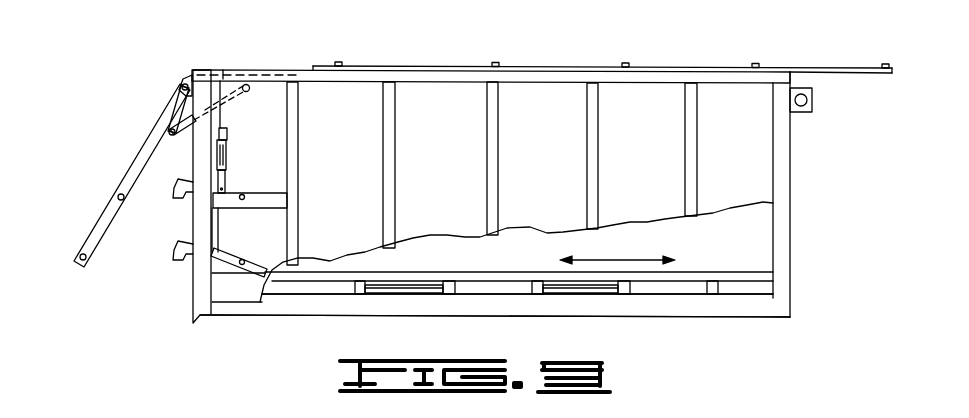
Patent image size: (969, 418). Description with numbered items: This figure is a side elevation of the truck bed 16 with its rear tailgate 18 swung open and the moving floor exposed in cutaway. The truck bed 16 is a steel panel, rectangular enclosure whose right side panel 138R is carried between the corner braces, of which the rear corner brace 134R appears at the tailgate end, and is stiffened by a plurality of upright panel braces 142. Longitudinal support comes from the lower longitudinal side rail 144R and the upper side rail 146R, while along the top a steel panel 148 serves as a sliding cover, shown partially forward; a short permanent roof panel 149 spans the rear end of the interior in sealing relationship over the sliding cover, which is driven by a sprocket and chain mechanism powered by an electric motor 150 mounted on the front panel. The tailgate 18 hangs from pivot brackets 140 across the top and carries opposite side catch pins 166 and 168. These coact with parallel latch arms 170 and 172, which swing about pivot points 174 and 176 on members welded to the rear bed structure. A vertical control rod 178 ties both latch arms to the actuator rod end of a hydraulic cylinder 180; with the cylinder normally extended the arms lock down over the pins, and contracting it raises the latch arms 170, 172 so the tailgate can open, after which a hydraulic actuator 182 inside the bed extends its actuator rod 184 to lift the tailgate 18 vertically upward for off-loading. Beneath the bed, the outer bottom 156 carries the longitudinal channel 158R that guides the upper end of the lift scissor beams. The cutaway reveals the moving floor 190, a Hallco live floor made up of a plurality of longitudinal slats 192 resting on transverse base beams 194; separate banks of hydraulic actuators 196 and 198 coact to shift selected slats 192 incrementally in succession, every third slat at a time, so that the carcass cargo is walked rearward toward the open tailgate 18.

The truck bed 16 is at (636, 92).
The rear tailgate 18 is at (147, 139).
The rear corner brace 134R is at (192, 315).
The side panel 138R is at (762, 172).
The pivot bracket 140 is at (188, 75).
The upright panel brace 142 is at (301, 126).
The longitudinal side rail 144R is at (237, 293).
The upper side rail 146R is at (731, 78).
The steel panel sliding cover 148 is at (543, 67).
The permanent roof panel 149 is at (291, 63).
The electric motor 150 is at (813, 99).
The outer bottom 156 is at (380, 300).
The longitudinal channel 158R is at (311, 304).
The catch pin 166 is at (118, 197).
The catch pin 168 is at (80, 256).
The latch arm 170 is at (179, 195).
The latch arm 172 is at (182, 257).
The pivot point 174 is at (242, 194).
The pivot point 176 is at (242, 259).
The vertical control rod 178 is at (219, 224).
The hydraulic cylinder 180 is at (230, 152).
The hydraulic actuator 182 is at (228, 55).
The actuator rod 184 is at (178, 113).
The moving floor 190 is at (492, 274).
The longitudinal slat 192 is at (413, 274).
The transverse base beam 194 is at (448, 293).
The bank of hydraulic actuators 196 is at (403, 291).
The bank of hydraulic actuators 198 is at (562, 294).